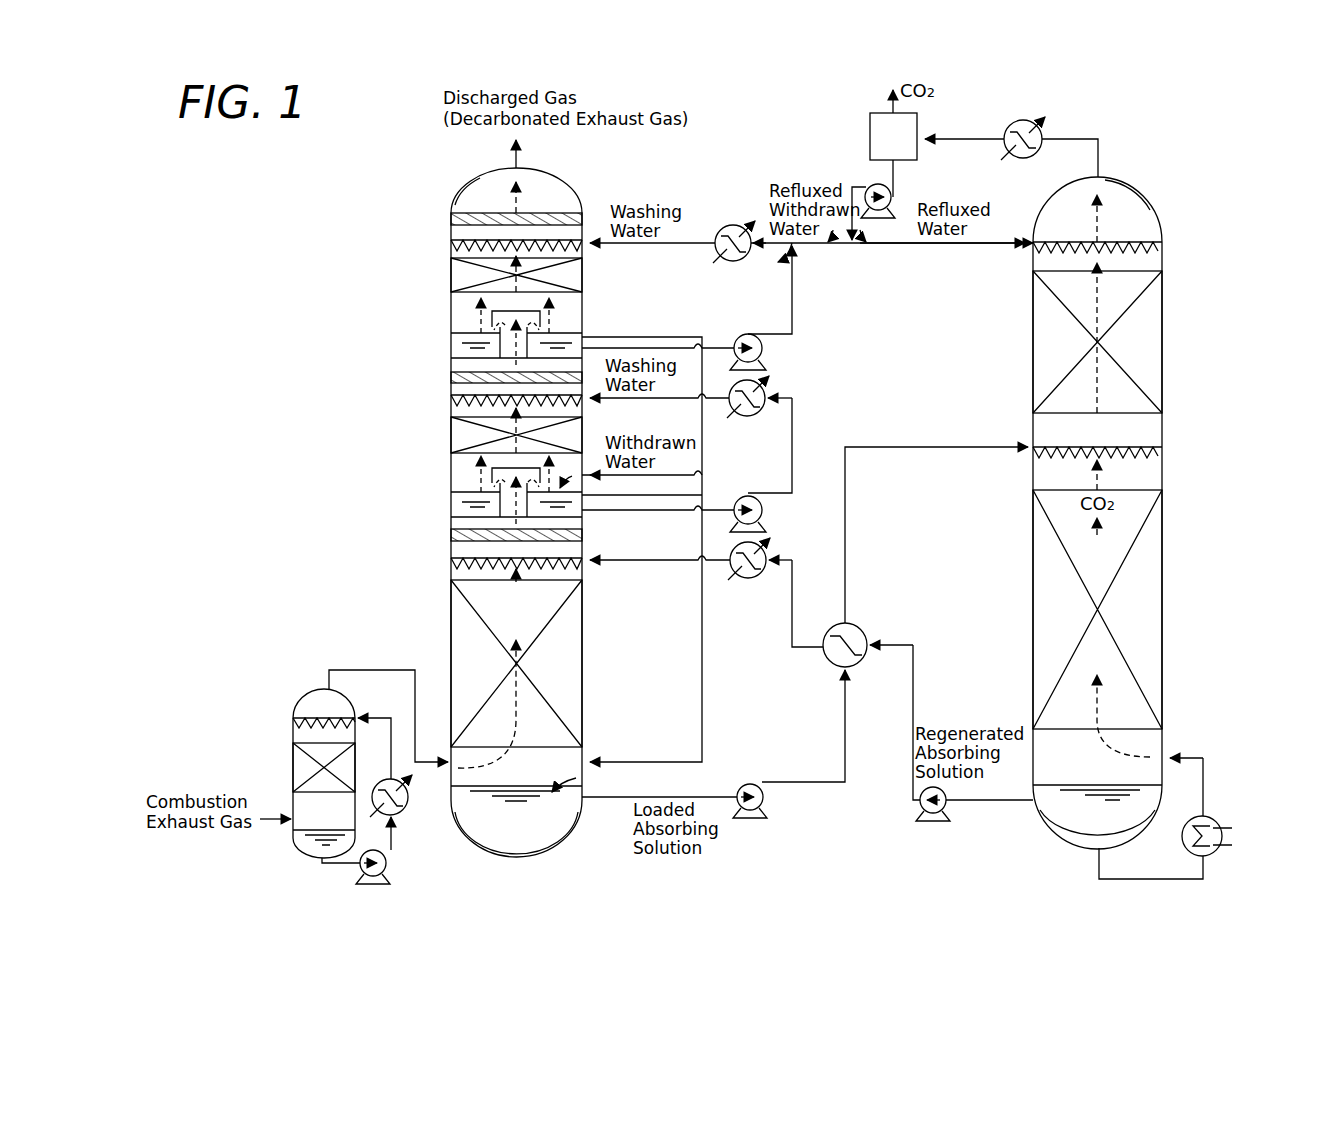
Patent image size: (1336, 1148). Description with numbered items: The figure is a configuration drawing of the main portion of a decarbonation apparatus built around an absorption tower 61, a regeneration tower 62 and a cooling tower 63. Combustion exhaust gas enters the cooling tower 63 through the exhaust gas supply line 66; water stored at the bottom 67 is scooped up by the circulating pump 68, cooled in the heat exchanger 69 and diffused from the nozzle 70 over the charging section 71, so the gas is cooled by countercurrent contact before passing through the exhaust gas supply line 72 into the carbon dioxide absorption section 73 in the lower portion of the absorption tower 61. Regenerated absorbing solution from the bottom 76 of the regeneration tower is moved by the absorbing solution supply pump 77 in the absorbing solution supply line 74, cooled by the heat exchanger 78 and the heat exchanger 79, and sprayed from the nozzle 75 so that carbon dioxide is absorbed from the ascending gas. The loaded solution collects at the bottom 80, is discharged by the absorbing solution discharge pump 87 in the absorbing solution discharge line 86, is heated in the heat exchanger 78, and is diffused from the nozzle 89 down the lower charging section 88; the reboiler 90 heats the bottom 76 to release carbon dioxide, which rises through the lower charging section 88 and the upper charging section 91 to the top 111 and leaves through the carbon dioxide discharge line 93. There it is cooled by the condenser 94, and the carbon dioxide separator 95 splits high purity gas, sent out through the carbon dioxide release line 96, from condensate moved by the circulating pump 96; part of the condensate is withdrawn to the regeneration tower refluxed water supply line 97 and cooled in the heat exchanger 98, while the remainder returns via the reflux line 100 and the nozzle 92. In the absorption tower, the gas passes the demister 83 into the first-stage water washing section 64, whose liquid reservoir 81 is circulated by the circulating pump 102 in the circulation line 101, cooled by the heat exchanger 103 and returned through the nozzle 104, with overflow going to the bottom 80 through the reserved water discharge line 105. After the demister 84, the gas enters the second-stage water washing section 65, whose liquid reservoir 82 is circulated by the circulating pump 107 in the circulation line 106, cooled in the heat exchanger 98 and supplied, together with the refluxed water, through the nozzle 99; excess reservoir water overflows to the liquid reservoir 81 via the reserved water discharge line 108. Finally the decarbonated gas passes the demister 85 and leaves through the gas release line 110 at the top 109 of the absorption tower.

The absorption tower 61 is at (573, 186).
The regeneration tower 62 is at (1157, 200).
The cooling tower 63 is at (315, 690).
The first-stage water washing section 64 is at (462, 432).
The second-stage water washing section 65 is at (462, 274).
The exhaust gas supply line 66 is at (272, 820).
The bottom of the cooling tower 67 is at (308, 852).
The circulating pump 68 is at (388, 878).
The heat exchanger 69 is at (396, 818).
The nozzle 70 is at (302, 716).
The charging section 71 is at (300, 762).
The exhaust gas supply line 72 is at (368, 670).
The carbon dioxide absorption section 73 is at (460, 616).
The absorbing solution supply line 74 is at (913, 682).
The nozzle 75 is at (451, 559).
The bottom of the regeneration tower 76 is at (1062, 834).
The absorbing solution supply pump 77 is at (920, 815).
The heat exchanger 78 is at (860, 628).
The heat exchanger 79 is at (762, 578).
The bottom of the absorption tower 80 is at (572, 825).
The liquid reservoir 81 is at (451, 507).
The liquid reservoir 82 is at (451, 348).
The demister 83 is at (451, 535).
The demister 84 is at (451, 378).
The demister 85 is at (451, 219).
The absorbing solution discharge line 86 is at (810, 782).
The absorbing solution discharge pump 87 is at (762, 804).
The lower charging section 88 is at (1158, 614).
The nozzle 89 is at (1152, 441).
The reboiler 90 is at (1205, 815).
The upper charging section 91 is at (1162, 354).
The nozzle 92 is at (1162, 236).
The carbon dioxide discharge line 93 is at (1100, 140).
The condenser (cooler) 94 is at (1040, 130).
The carbon dioxide separator 95 is at (870, 140).
The carbon dioxide release line and circulating pump 96 is at (887, 107).
The regeneration tower refluxed water supply line 97 is at (826, 245).
The heat exchanger 98 is at (720, 222).
The nozzle 99 is at (451, 241).
The reflux line 100 is at (934, 245).
The circulation line 101 is at (792, 458).
The circulating pump 102 is at (762, 520).
The heat exchanger 103 is at (766, 390).
The nozzle 104 is at (451, 397).
The reserved water discharge line 105 is at (702, 672).
The circulation line 106 is at (792, 305).
The circulating pump 107 is at (765, 358).
The reserved water discharge line 108 is at (594, 337).
The top of the absorption tower 109 is at (453, 200).
The gas release line 110 is at (513, 152).
The top of the regeneration tower 111 is at (1127, 180).